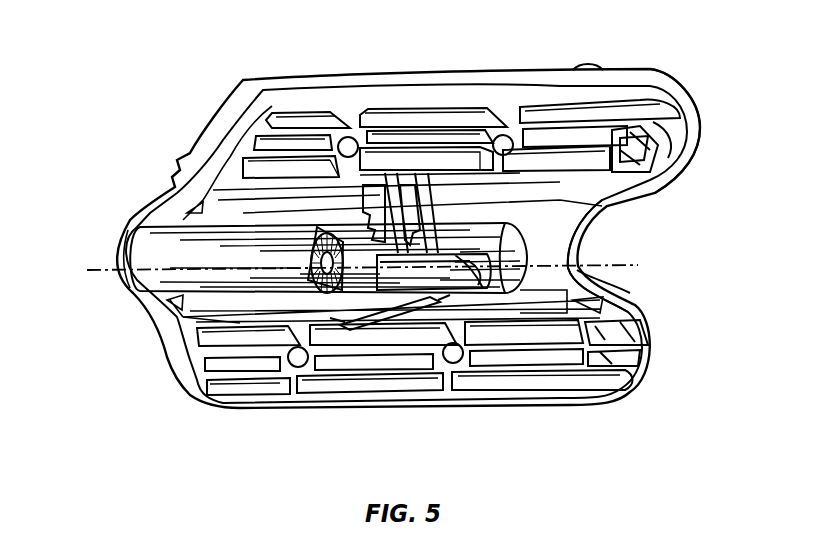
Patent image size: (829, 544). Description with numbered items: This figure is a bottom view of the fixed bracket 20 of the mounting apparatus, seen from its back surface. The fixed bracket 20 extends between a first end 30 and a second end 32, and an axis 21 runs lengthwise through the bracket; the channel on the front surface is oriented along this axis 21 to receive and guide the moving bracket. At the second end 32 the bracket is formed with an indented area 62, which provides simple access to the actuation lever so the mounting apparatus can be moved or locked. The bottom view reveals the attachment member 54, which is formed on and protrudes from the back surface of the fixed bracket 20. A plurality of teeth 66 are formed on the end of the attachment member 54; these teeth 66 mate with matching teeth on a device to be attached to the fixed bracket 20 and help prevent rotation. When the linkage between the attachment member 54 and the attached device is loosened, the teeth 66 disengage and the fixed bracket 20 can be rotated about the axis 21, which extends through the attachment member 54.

The fixed bracket 20 is at (397, 82).
The axis 21 is at (103, 275).
The first end 30 is at (118, 248).
The second end 32 is at (700, 147).
The attachment member 54 is at (308, 252).
The indented area 62 is at (597, 253).
The teeth 66 is at (343, 265).